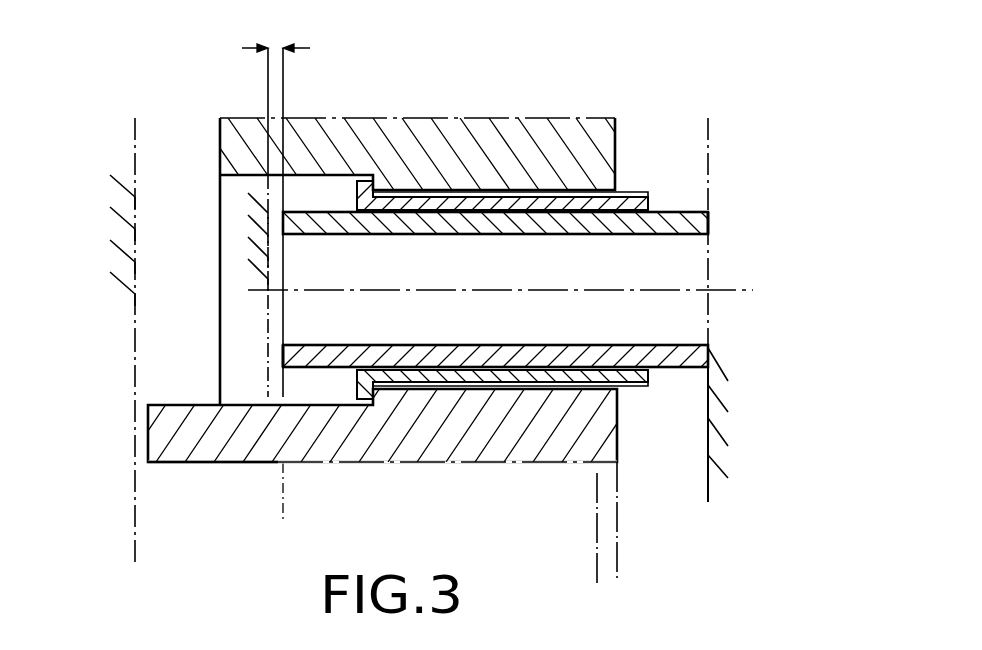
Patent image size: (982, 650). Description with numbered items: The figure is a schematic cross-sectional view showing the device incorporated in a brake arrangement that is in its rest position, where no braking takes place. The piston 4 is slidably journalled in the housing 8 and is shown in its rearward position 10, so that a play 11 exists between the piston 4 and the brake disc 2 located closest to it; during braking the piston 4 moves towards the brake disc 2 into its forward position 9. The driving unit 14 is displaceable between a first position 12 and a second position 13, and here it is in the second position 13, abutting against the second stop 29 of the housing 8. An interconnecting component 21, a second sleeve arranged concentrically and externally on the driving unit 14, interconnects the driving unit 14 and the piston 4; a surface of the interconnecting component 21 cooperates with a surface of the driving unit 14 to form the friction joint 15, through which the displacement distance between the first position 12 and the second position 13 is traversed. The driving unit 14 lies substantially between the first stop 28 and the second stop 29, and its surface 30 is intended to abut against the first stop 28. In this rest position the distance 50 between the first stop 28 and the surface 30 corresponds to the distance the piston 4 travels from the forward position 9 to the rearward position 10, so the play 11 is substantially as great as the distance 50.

The brake disc 2 is at (120, 265).
The piston 4 is at (210, 443).
The housing 8 is at (723, 458).
The forward position 9 is at (595, 552).
The rearward position 10 is at (618, 553).
The play 11 is at (142, 455).
The first position 12 is at (267, 380).
The second position 13 is at (283, 521).
The driving unit 14 is at (400, 223).
The friction joint 15 is at (540, 207).
The interconnecting component 21 is at (472, 374).
The first stop 28 is at (262, 243).
The second stop 29 is at (708, 220).
The surface of the driving unit 30 is at (282, 352).
The distance 50 is at (271, 47).